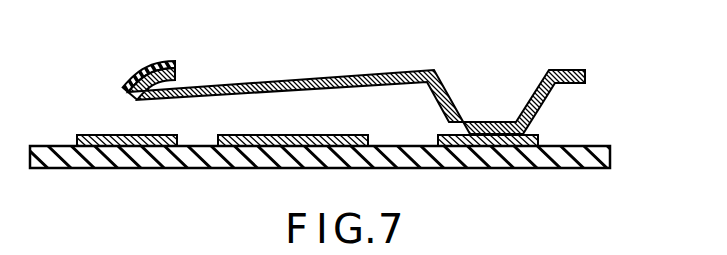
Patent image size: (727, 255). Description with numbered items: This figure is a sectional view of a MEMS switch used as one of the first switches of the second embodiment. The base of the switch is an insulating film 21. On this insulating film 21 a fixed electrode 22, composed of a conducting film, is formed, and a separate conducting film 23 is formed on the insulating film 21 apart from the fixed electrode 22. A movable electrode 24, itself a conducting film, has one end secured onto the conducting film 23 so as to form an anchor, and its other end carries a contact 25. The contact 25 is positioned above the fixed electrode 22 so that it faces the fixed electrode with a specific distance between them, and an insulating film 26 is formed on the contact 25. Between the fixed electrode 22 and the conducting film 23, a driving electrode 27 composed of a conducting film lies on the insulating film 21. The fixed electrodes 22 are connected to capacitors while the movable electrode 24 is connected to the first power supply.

The insulating film 21 is at (612, 158).
The fixed electrode 22 is at (76, 134).
The conducting film 23 is at (539, 137).
The movable electrode 24 is at (298, 68).
The contact 25 is at (125, 98).
The insulating film 26 is at (161, 58).
The driving electrode 27 is at (313, 134).